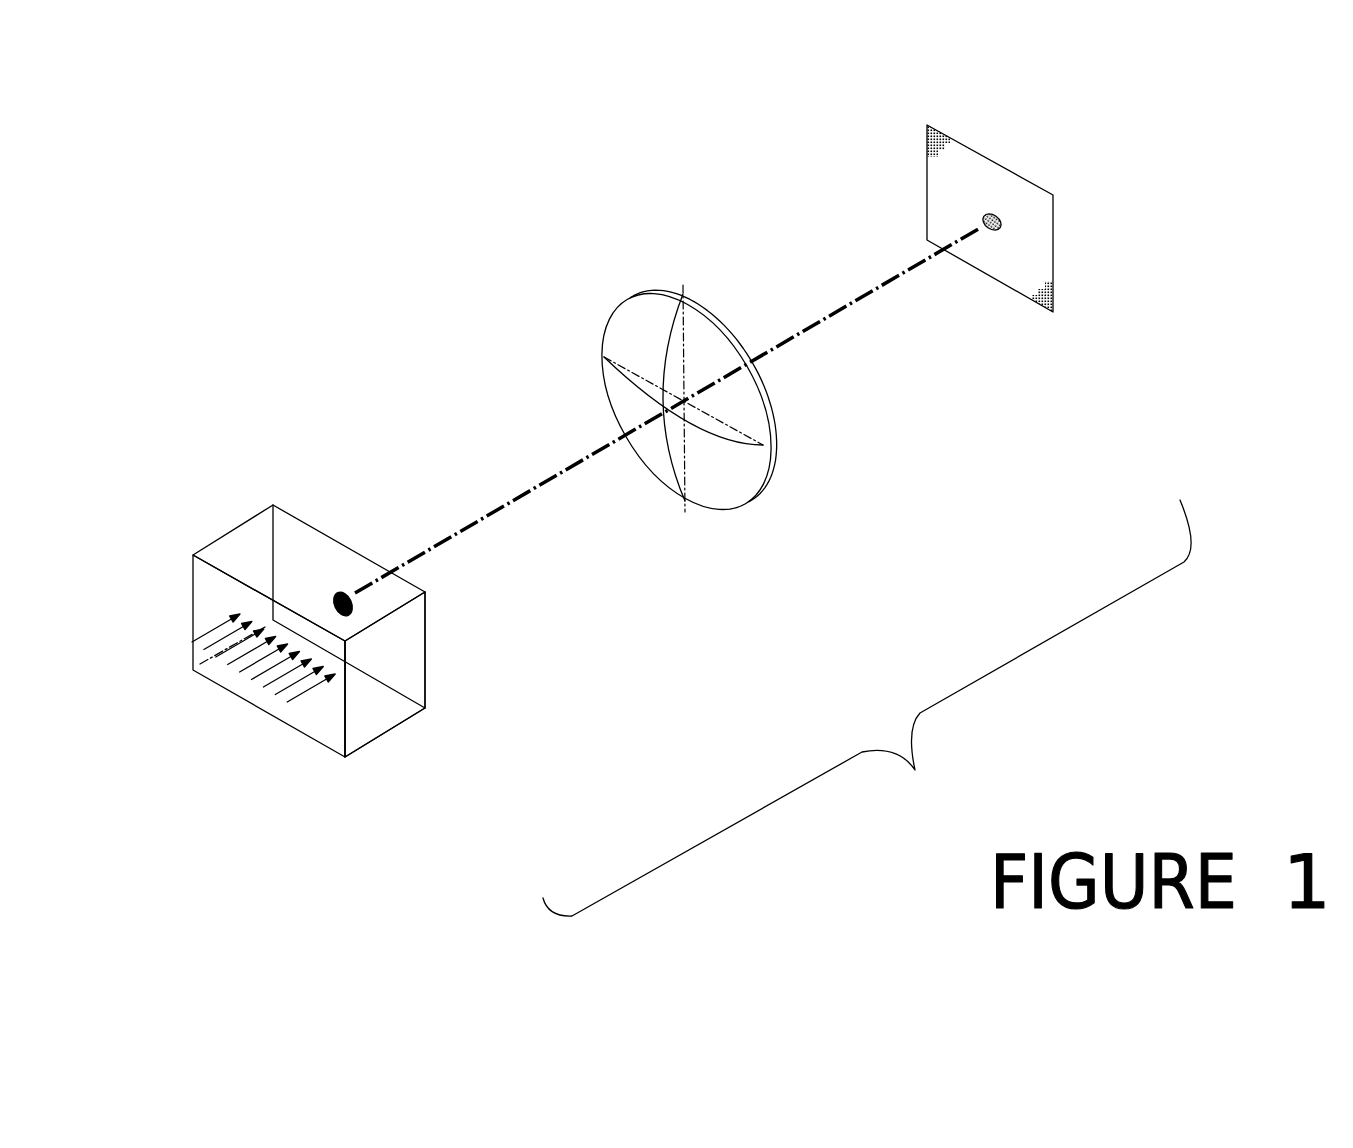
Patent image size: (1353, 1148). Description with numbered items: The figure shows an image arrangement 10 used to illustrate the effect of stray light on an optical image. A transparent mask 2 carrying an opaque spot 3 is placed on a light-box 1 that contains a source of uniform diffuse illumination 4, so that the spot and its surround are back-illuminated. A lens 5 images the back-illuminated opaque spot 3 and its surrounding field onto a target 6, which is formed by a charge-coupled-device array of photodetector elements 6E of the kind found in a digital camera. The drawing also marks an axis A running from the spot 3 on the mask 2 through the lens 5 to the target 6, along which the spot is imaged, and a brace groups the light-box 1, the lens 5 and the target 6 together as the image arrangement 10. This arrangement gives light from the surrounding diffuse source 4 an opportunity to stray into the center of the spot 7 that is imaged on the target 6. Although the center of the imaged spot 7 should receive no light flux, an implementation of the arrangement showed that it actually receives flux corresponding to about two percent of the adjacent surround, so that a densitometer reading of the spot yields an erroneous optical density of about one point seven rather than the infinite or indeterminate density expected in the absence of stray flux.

The light-box 1 is at (393, 707).
The transparent mask 2 is at (408, 650).
The opaque spot 3 is at (340, 593).
The source of uniform diffuse illumination 4 is at (257, 680).
The lens 5 is at (760, 492).
The target 6 is at (933, 170).
The spot imaged on the target 7 is at (1003, 222).
The photodetector elements 6E is at (1040, 300).
The optical axis A is at (508, 510).
The image arrangement 10 is at (867, 708).